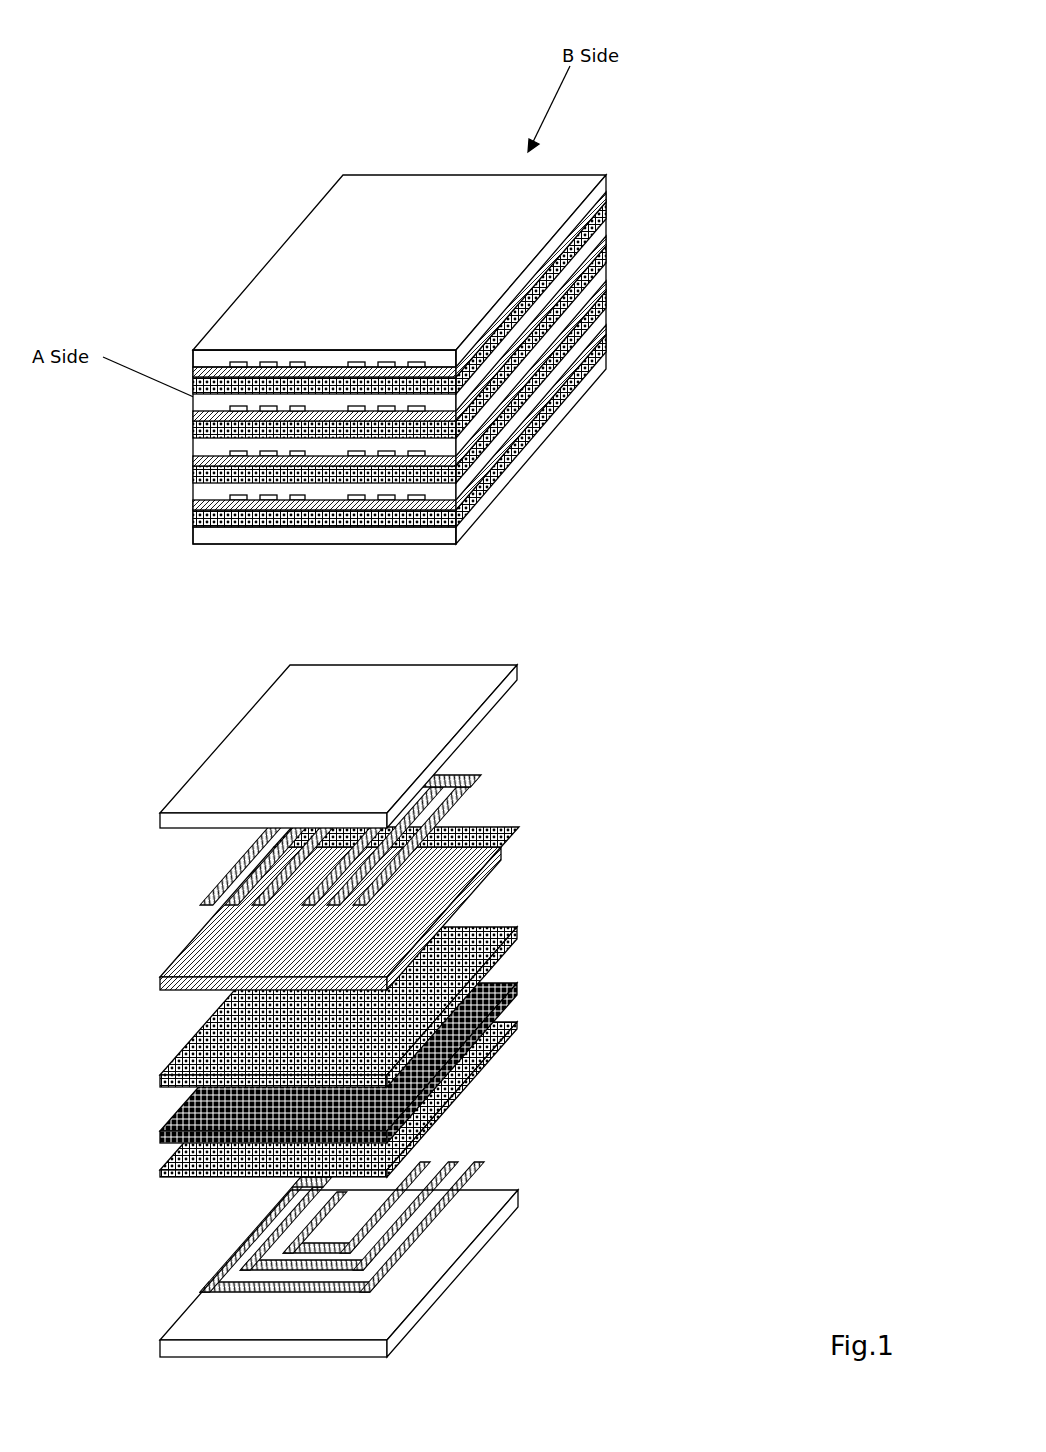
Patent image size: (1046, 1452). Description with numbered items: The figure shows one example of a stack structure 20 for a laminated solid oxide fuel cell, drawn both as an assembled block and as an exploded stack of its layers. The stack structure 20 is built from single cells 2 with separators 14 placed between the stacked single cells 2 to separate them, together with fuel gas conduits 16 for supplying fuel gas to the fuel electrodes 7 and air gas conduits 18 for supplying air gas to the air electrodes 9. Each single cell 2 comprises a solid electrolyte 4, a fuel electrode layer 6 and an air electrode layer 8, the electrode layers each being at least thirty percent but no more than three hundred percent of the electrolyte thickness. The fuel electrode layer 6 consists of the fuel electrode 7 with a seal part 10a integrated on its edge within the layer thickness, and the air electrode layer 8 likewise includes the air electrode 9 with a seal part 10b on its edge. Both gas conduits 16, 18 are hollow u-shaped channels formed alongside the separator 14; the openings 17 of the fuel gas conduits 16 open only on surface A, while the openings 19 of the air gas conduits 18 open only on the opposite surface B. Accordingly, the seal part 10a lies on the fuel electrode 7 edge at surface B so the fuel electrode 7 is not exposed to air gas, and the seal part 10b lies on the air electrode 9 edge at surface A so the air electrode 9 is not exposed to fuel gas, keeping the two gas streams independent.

The single cell 2 is at (727, 282).
The solid electrolyte 4 is at (600, 312).
The fuel electrode layer 6 is at (605, 294).
The fuel electrode 7 is at (468, 888).
The air electrode layer 8 is at (588, 333).
The air electrode 9 is at (393, 1076).
The seal part 10a is at (500, 828).
The seal part 10b is at (387, 1152).
The separator 14 is at (323, 237).
The fuel gas conduit 16 is at (248, 333).
The opening 17 is at (238, 365).
The air gas conduit 18 is at (398, 179).
The opening 19 is at (500, 172).
The stack structure 20 is at (623, 177).